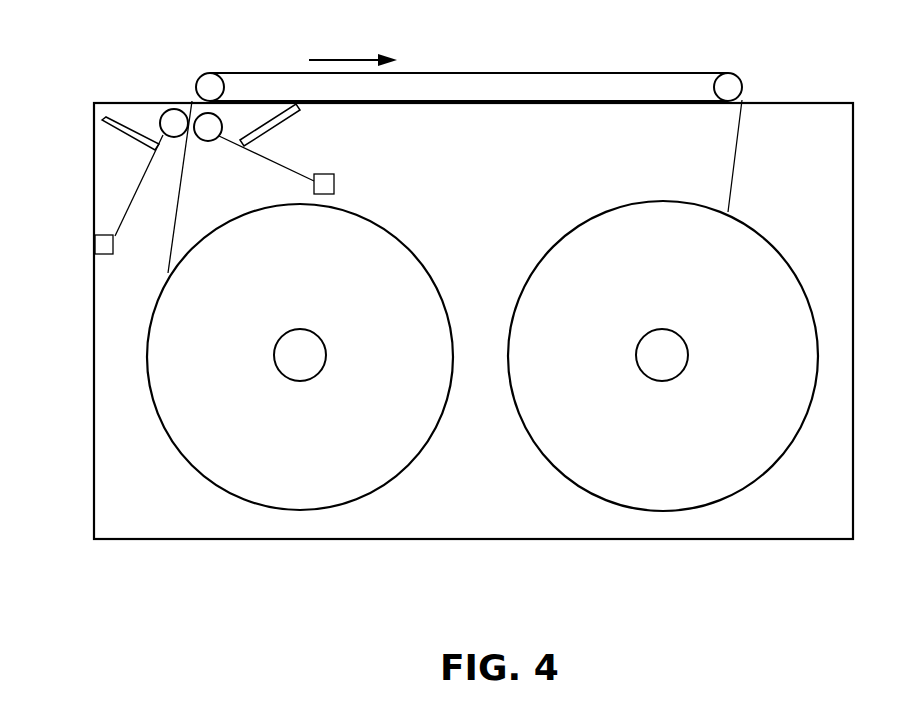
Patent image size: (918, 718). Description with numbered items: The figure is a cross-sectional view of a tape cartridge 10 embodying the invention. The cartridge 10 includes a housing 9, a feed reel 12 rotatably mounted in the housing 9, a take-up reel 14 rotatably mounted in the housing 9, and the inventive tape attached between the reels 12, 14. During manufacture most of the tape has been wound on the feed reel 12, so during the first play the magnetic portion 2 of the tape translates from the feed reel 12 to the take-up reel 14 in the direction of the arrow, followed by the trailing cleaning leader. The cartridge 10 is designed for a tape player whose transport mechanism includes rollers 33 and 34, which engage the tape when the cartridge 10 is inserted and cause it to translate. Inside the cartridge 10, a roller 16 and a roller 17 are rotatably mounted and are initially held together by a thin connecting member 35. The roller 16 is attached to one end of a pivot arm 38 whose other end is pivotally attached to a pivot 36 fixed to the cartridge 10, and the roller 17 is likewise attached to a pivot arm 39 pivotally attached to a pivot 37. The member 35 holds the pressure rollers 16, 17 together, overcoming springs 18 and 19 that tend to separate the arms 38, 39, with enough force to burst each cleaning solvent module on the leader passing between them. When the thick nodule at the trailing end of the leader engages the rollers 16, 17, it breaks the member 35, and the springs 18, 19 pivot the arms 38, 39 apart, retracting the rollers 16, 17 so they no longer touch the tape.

The magnetic portion 2 is at (686, 72).
The housing 9 is at (94, 417).
The tape cartridge 10 is at (513, 556).
The feed reel 12 is at (300, 510).
The take-up reel 14 is at (663, 511).
The roller 16 is at (170, 108).
The roller 17 is at (208, 141).
The spring 18 is at (278, 118).
The spring 19 is at (118, 132).
The roller 33 is at (209, 73).
The roller 34 is at (742, 78).
The thin connecting member 35 is at (192, 100).
The pivot 36 is at (100, 246).
The pivot 37 is at (334, 186).
The pivot arm 38 is at (122, 210).
The pivot arm 39 is at (275, 161).